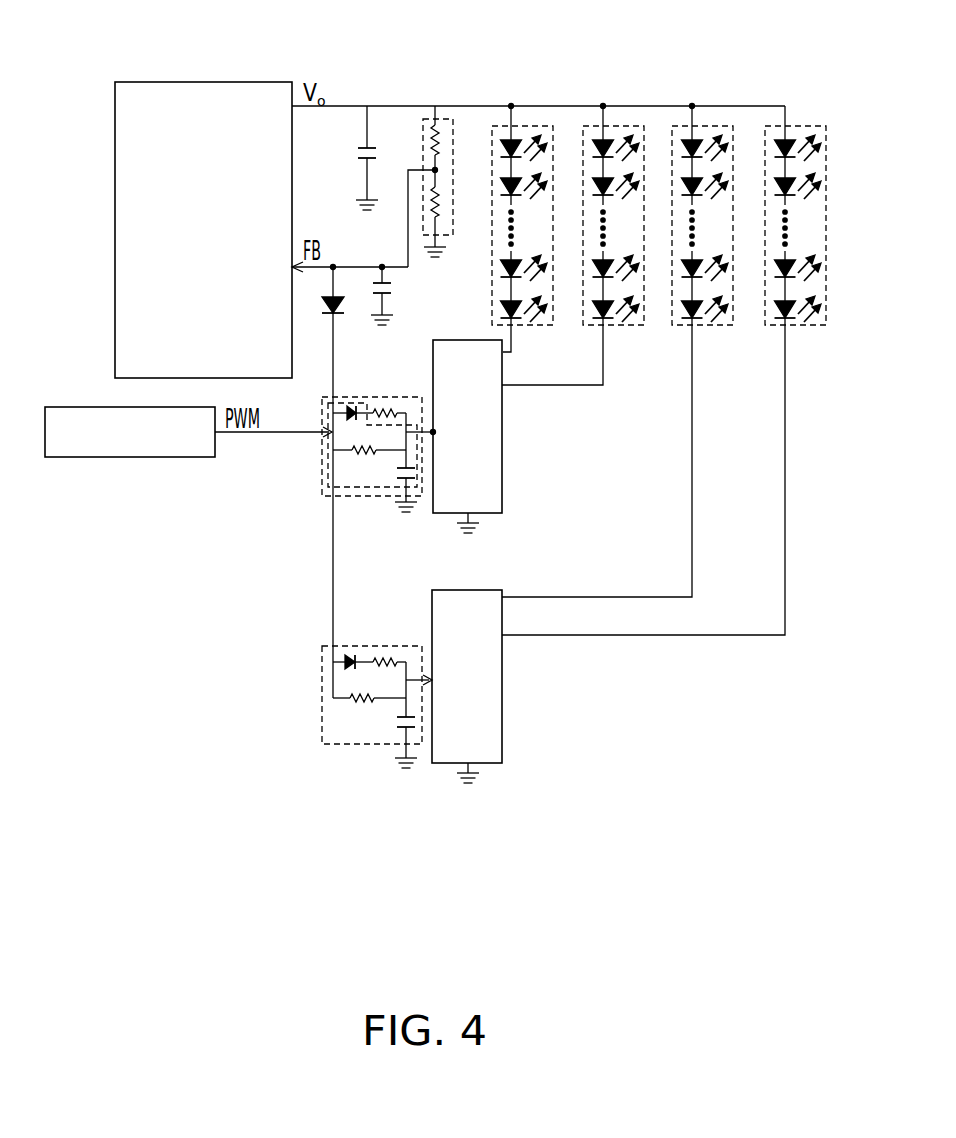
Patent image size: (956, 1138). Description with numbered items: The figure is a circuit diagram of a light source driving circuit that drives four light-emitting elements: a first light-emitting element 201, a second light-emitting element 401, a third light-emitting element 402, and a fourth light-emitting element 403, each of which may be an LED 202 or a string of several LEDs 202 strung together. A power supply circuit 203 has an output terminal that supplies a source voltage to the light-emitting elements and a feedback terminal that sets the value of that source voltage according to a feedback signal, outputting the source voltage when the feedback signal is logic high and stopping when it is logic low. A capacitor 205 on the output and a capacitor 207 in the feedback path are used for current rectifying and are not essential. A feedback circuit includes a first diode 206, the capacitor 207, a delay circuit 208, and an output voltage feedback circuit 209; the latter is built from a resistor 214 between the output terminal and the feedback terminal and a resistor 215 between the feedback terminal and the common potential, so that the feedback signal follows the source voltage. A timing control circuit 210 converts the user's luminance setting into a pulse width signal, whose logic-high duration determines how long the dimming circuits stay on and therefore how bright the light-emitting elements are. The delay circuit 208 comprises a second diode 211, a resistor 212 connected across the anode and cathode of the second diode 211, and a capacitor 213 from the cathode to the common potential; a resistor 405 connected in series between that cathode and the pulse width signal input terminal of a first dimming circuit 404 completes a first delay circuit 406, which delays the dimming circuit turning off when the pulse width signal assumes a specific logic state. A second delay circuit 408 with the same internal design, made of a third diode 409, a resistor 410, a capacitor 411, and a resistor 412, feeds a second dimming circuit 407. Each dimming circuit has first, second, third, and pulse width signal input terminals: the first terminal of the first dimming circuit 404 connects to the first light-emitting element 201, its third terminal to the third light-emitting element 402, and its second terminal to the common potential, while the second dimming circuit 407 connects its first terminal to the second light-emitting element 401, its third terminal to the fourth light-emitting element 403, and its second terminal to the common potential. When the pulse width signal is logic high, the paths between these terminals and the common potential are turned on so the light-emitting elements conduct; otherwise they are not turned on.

The first light-emitting element 201 is at (545, 195).
The LED 202 is at (519, 131).
The power supply circuit 203 is at (212, 82).
The capacitor 205 is at (361, 158).
The first diode 206 is at (331, 305).
The capacitor 207 is at (388, 296).
The delay circuit 208 is at (330, 460).
The output voltage feedback circuit 209 is at (439, 164).
The timing control circuit 210 is at (147, 458).
The second diode 211 is at (348, 407).
The resistor 212 is at (366, 452).
The capacitor 213 is at (400, 479).
The resistor 214 is at (437, 118).
The resistor 215 is at (433, 200).
The second light-emitting element 401 is at (700, 121).
The third light-emitting element 402 is at (612, 120).
The fourth light-emitting element 403 is at (793, 121).
The first dimming circuit 404 is at (502, 437).
The resistor 405 is at (380, 406).
The first delay circuit 406 is at (337, 460).
The second dimming circuit 407 is at (502, 687).
The second delay circuit 408 is at (337, 710).
The third diode 409 is at (347, 658).
The resistor 410 is at (367, 701).
The capacitor 411 is at (400, 729).
The resistor 412 is at (381, 656).